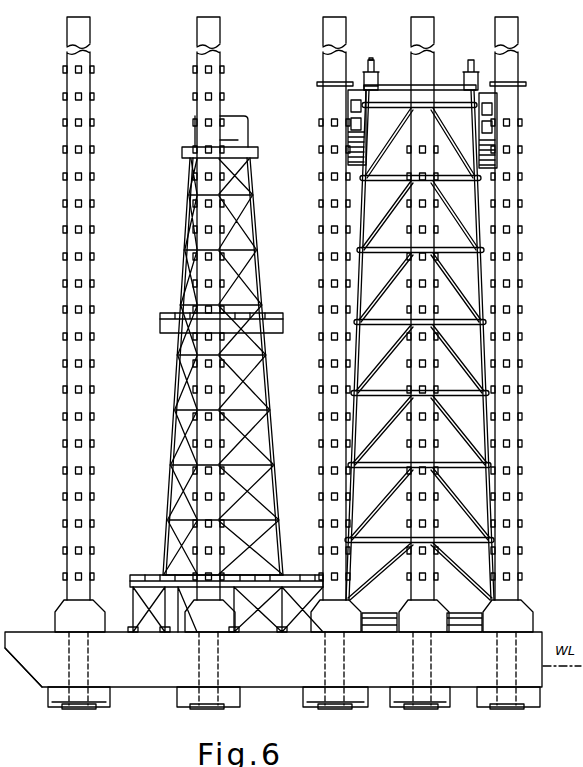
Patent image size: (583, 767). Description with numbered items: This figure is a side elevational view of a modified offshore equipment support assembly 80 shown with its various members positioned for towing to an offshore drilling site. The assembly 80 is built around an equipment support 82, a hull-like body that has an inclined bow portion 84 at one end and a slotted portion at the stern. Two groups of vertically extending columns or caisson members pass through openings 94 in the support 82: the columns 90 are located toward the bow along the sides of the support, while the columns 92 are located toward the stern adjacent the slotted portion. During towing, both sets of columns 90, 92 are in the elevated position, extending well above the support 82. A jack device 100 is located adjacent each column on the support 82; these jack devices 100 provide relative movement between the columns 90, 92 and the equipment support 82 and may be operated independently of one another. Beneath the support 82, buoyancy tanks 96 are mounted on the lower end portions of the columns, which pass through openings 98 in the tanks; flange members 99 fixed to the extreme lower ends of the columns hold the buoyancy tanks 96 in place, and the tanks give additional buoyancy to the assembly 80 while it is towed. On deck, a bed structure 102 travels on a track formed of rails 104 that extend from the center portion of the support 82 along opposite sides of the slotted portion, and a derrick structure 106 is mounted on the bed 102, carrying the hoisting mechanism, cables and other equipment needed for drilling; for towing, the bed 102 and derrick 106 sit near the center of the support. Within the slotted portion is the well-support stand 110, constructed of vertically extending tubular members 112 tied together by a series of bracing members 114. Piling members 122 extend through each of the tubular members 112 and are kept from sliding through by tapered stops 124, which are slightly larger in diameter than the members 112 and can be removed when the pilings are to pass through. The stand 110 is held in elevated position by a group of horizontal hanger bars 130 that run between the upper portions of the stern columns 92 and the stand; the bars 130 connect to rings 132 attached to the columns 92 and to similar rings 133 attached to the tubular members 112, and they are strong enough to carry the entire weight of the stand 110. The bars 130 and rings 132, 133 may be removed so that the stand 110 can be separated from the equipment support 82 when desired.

The support assembly 80 is at (54, 260).
The equipment support 82 is at (28, 632).
The inclined bow portion 84 is at (0, 665).
The columns 90 is at (91, 76).
The columns 92 is at (434, 72).
The openings 94 is at (92, 655).
The buoyancy tanks 96 is at (110, 700).
The openings 98 is at (52, 702).
The flange members 99 is at (70, 709).
The jack devices 100 is at (51, 610).
The bed structure 102 is at (135, 575).
The rails 104 is at (460, 625).
The derrick structure 106 is at (180, 267).
The well-support stand 110 is at (422, 309).
The tubular members 112 is at (361, 192).
The bracing members 114 is at (395, 260).
The piling members 122 is at (371, 60).
The stops 124 is at (374, 66).
The hanger bars 130 is at (348, 96).
The rings 132 is at (317, 83).
The rings 133 is at (378, 86).